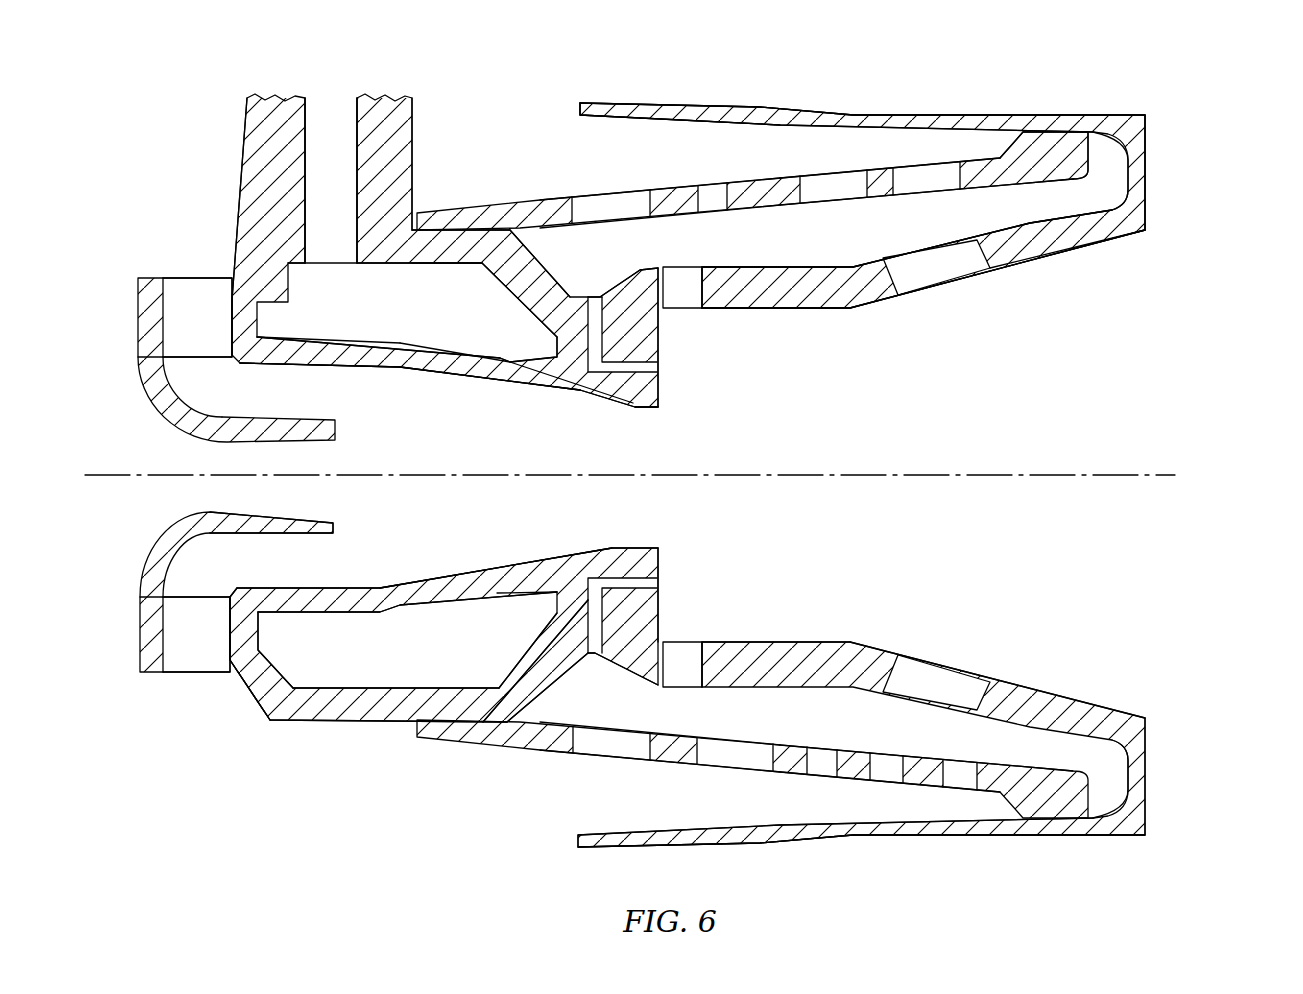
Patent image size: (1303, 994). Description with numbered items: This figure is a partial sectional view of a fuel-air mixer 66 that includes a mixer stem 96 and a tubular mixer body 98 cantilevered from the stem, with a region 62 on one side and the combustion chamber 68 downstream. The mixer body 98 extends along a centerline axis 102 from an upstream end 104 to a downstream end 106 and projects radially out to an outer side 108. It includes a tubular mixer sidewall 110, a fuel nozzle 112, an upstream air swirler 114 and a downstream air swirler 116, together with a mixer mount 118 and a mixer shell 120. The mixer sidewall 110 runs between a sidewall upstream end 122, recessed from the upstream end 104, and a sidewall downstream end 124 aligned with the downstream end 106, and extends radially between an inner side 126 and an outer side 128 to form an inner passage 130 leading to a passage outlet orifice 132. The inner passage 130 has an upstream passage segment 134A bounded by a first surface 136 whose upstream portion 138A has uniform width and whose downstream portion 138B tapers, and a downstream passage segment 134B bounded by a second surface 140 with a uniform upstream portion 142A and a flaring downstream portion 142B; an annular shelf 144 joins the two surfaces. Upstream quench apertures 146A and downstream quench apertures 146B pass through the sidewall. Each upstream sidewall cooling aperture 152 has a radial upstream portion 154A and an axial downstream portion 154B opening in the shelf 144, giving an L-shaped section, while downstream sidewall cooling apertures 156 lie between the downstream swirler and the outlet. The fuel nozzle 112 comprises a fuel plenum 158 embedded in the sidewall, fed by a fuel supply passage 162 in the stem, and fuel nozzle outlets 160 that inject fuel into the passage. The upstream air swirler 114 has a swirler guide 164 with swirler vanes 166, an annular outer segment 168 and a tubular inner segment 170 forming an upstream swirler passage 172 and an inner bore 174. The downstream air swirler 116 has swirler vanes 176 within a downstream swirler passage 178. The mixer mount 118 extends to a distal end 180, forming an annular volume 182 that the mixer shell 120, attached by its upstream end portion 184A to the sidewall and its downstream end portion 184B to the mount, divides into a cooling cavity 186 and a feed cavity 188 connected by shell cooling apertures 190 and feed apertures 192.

The first side region 62 is at (132, 172).
The fuel-air mixer 66 is at (1180, 88).
The combustion chamber 68 is at (1217, 380).
The mixer stem 96 is at (238, 107).
The mixer body 98 is at (385, 815).
The centerline axis 102 is at (1168, 480).
The upstream end 104 is at (138, 290).
The downstream end 106 is at (1150, 145).
The outer side 108 is at (768, 95).
The mixer sidewall 110 is at (852, 318).
The fuel nozzle 112 is at (524, 538).
The upstream air swirler 114 is at (193, 707).
The downstream air swirler 116 is at (660, 752).
The mixer mount 118 is at (797, 852).
The mixer shell 120 is at (525, 189).
The sidewall upstream end 122 is at (225, 658).
The sidewall downstream end 124 is at (1150, 145).
The sidewall inner side 126 is at (650, 421).
The sidewall outer side 128 is at (855, 250).
The inner passage 130 is at (818, 518).
The passage outlet orifice 132 is at (1150, 660).
The upstream passage segment 134A is at (459, 463).
The downstream passage segment 134B is at (929, 463).
The inner first surface 136 is at (385, 397).
The upstream portion of the first surface 138A is at (295, 365).
The downstream portion of the first surface 138B is at (475, 380).
The inner second surface 140 is at (890, 314).
The upstream portion of the second surface 142A is at (808, 310).
The downstream portion of the second surface 142B is at (1030, 273).
The annular shelf 144 is at (660, 395).
The upstream quench apertures 146A is at (955, 292).
The downstream quench apertures 146B is at (1062, 681).
The upstream sidewall cooling aperture 152 is at (620, 390).
The upstream portion of the upstream sidewall cooling aperture 154A is at (560, 650).
The downstream portion of the upstream sidewall cooling aperture 154B is at (660, 572).
The downstream sidewall cooling apertures 156 is at (745, 285).
The fuel plenum 158 is at (382, 310).
The fuel nozzle outlets 160 is at (503, 356).
The fuel supply passage 162 is at (330, 117).
The swirler guide 164 is at (148, 545).
The swirler vanes 166 is at (165, 366).
The outer segment 168 is at (138, 655).
The inner segment 170 is at (245, 512).
The upstream swirler passage 172 is at (190, 299).
The inner bore 174 is at (165, 453).
The swirler vanes 176 is at (648, 278).
The downstream swirler passage 178 is at (685, 276).
The distal end 180 is at (573, 100).
The annular volume 182 is at (688, 128).
The upstream end portion of the mixer shell 184A is at (468, 200).
The downstream end portion of the mixer shell 184B is at (1055, 125).
The cooling cavity 186 is at (903, 231).
The feed cavity 188 is at (841, 163).
The shell cooling apertures 190 is at (835, 190).
The feed apertures 192 is at (612, 200).